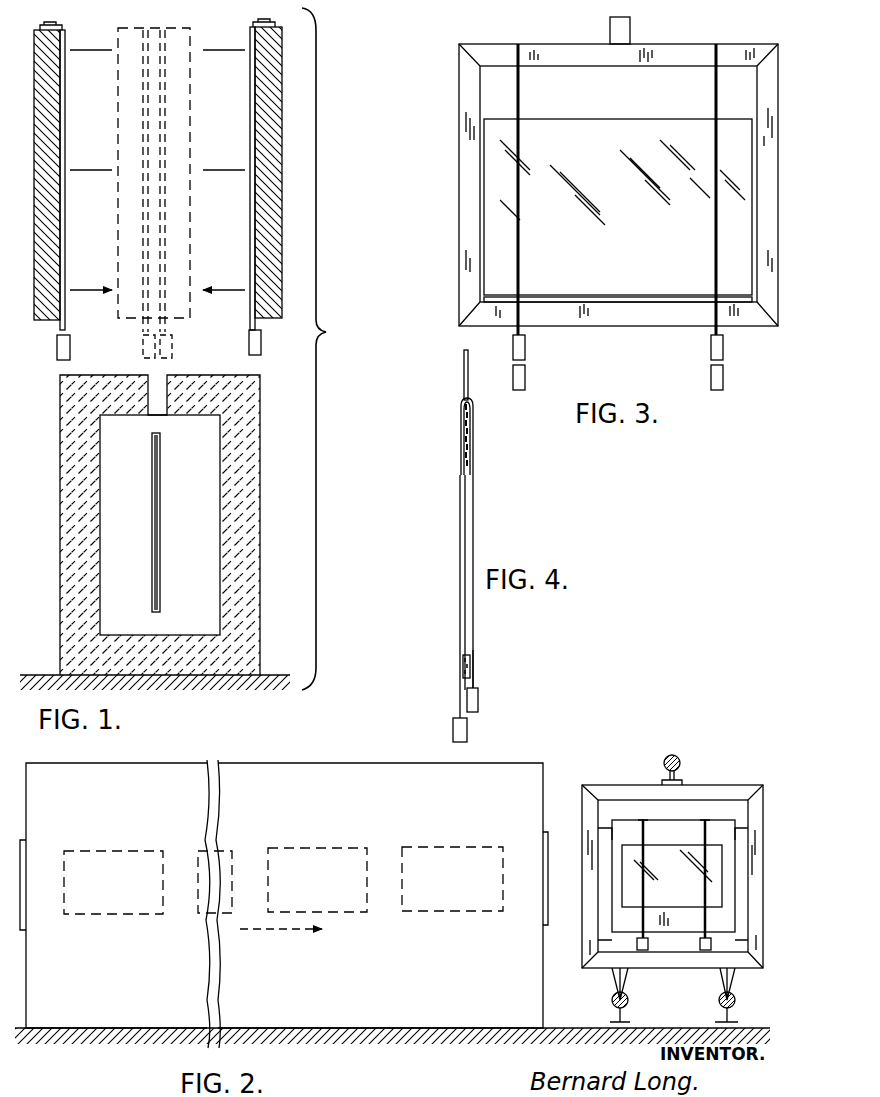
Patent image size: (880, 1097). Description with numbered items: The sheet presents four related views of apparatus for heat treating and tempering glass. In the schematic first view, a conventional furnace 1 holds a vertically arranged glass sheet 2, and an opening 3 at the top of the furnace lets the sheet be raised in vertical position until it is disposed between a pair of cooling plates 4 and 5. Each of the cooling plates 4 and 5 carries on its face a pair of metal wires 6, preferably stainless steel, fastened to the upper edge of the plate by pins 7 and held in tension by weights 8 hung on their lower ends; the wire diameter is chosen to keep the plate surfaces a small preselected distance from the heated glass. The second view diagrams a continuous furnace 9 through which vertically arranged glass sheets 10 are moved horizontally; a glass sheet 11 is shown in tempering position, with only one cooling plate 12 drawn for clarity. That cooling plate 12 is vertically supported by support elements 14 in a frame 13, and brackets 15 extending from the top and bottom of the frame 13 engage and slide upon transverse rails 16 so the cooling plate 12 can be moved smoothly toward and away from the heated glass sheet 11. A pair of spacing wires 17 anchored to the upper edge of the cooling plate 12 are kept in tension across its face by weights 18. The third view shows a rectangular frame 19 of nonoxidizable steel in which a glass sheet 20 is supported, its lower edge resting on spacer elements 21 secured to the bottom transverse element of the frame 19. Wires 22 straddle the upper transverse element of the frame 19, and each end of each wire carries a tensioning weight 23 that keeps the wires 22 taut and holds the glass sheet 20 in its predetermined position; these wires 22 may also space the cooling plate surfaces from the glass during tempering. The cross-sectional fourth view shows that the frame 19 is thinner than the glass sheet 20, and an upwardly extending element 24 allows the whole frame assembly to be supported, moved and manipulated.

In FIG. 1, the furnace 1 is at (245, 529).
In FIG. 1, the glass sheet 2 is at (162, 478).
In FIG. 1, the opening 3 is at (160, 380).
In FIG. 1, the cooling plate 4 is at (270, 156).
In FIG. 1, the cooling plate 5 is at (36, 165).
In FIG. 1, the metal wires 6 is at (66, 246).
In FIG. 1, the pins 7 is at (52, 24).
In FIG. 1, the weights 8 is at (57, 350).
In FIG. 2, the furnace 9 is at (258, 766).
In FIG. 2, the glass sheets 10 is at (200, 922).
In FIG. 2, the glass sheet 11 is at (724, 872).
In FIG. 2, the cooling plate 12 is at (680, 820).
In FIG. 2, the frame 13 is at (740, 785).
In FIG. 2, the support elements 14 is at (604, 838).
In FIG. 2, the brackets 15 is at (666, 776).
In FIG. 2, the rails 16 is at (676, 756).
In FIG. 2, the spacing wires 17 is at (640, 830).
In FIG. 2, the weights 18 is at (660, 952).
In FIG. 3, the rectangular frame 19 is at (462, 108).
In FIG. 4, the rectangular frame 19 is at (474, 668).
In FIG. 3, the glass sheet 20 is at (492, 192).
In FIG. 4, the glass sheet 20 is at (466, 508).
In FIG. 3, the spacer elements 21 is at (702, 302).
In FIG. 4, the spacer elements 21 is at (462, 656).
In FIG. 3, the wires 22 is at (520, 98).
In FIG. 4, the wires 22 is at (462, 446).
In FIG. 3, the tensioning weights 23 is at (527, 376).
In FIG. 4, the tensioning weights 23 is at (468, 734).
In FIG. 3, the upwardly extending element 24 is at (632, 28).
In FIG. 4, the upwardly extending element 24 is at (462, 382).